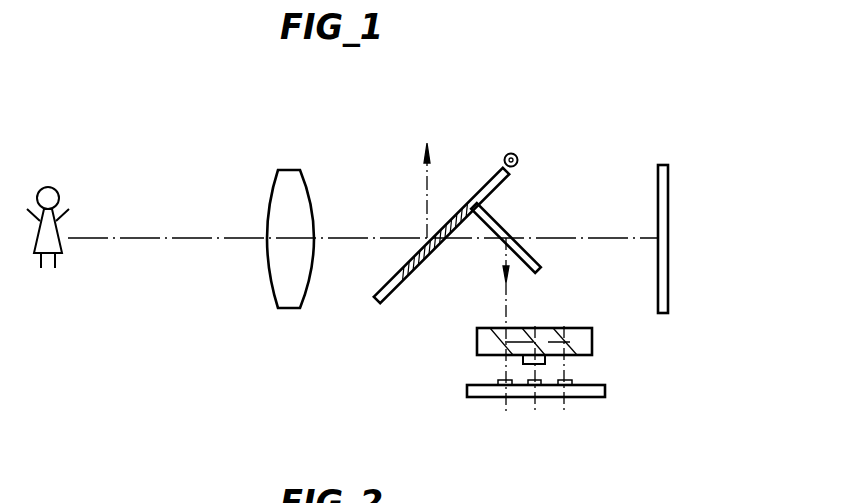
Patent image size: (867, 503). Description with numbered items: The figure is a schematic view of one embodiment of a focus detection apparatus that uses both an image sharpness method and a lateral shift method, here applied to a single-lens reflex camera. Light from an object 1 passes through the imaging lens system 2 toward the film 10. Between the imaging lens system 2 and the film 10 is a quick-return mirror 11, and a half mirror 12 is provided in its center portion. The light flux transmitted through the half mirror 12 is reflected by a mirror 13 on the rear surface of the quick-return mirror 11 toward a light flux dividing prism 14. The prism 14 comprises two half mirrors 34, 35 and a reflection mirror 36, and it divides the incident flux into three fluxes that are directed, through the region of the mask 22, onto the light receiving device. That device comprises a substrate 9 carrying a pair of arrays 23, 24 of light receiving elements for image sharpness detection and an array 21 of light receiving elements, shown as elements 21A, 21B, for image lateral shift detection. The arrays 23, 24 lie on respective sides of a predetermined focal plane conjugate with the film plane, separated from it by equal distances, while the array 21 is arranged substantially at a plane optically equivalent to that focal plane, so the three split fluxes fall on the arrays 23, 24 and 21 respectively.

The object 1 is at (59, 193).
The imaging lens system 2 is at (300, 170).
The substrate 9 is at (539, 441).
The film 10 is at (670, 178).
The quick-return mirror 11 is at (431, 214).
The half mirror 12 is at (400, 257).
The mirror 13 is at (503, 218).
The light flux dividing prism 14 is at (563, 321).
The array of light receiving elements 21 is at (527, 441).
The light receiving element 21A is at (524, 422).
The light receiving element 21B is at (534, 398).
The aperture mask 22 is at (545, 360).
The array of light receiving elements 23 is at (592, 414).
The array of light receiving elements 24 is at (493, 396).
The half mirror 34 is at (505, 328).
The half mirror 35 is at (537, 330).
The reflection mirror 36 is at (568, 330).